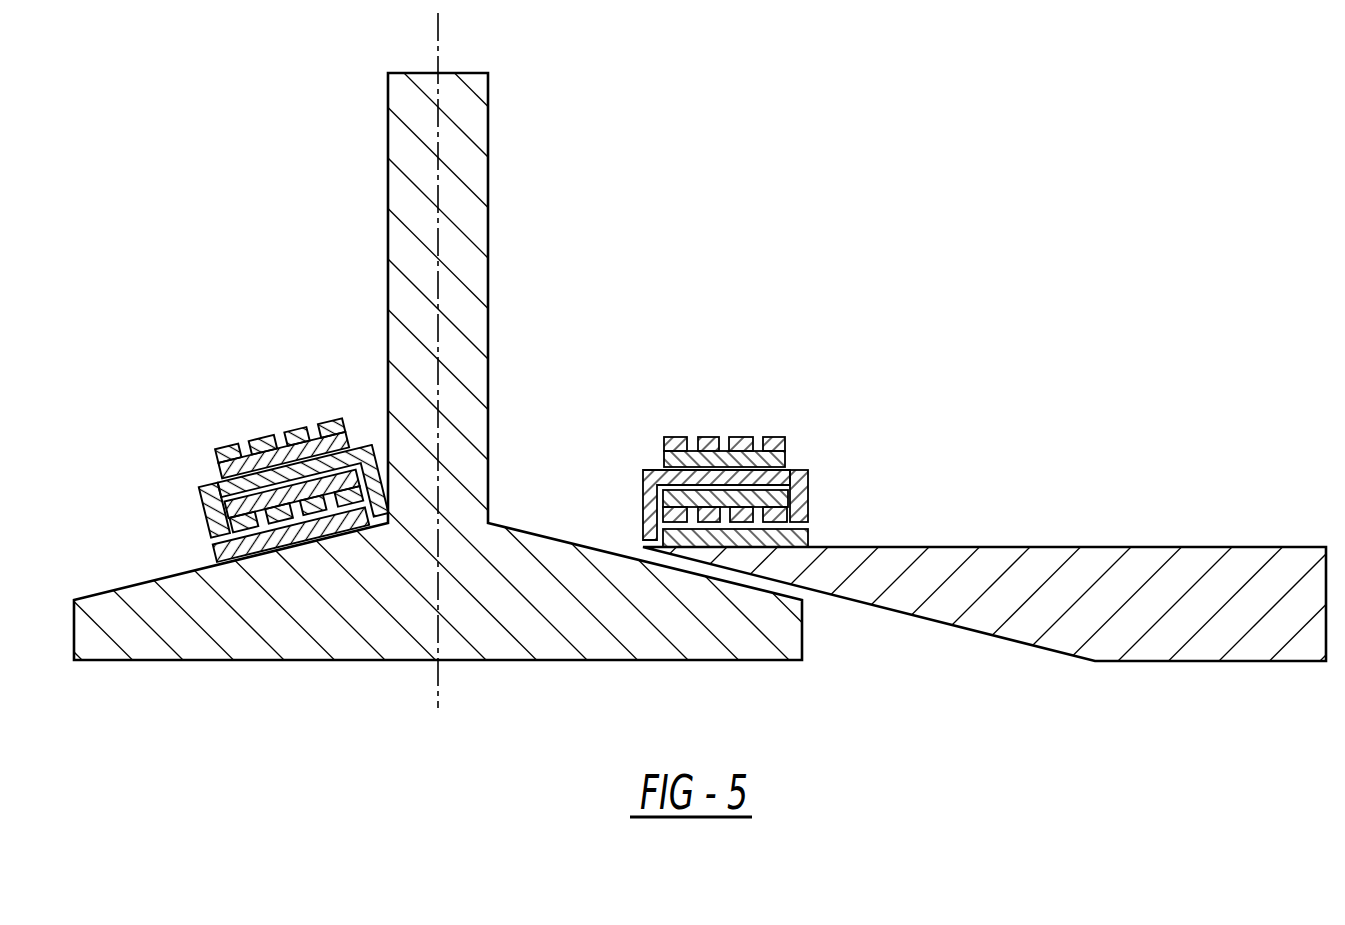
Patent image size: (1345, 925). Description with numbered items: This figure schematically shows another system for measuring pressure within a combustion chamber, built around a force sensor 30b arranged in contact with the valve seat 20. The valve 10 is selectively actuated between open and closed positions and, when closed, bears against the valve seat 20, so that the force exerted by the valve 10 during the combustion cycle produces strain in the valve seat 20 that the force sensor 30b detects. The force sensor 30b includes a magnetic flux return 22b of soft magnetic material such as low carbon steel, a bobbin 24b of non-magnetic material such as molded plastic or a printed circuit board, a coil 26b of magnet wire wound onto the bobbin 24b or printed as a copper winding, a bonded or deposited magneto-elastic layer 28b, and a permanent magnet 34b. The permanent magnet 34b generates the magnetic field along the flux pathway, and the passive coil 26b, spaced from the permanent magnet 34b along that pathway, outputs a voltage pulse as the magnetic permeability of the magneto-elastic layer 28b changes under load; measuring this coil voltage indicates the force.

The valve 10 is at (697, 627).
The valve seat 20 is at (1158, 633).
The force sensor 30b is at (515, 370).
The magnetic flux return 22b is at (708, 477).
The bobbin 24b is at (776, 500).
The coil 26b is at (784, 514).
The magneto-elastic layer 28b is at (808, 540).
The permanent magnet 34b is at (805, 499).